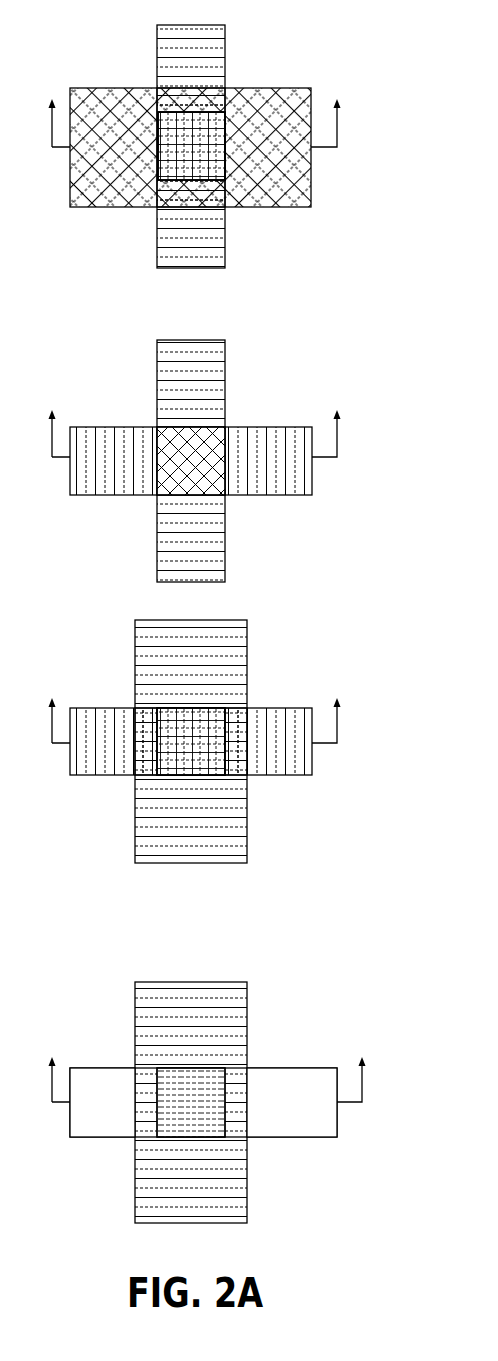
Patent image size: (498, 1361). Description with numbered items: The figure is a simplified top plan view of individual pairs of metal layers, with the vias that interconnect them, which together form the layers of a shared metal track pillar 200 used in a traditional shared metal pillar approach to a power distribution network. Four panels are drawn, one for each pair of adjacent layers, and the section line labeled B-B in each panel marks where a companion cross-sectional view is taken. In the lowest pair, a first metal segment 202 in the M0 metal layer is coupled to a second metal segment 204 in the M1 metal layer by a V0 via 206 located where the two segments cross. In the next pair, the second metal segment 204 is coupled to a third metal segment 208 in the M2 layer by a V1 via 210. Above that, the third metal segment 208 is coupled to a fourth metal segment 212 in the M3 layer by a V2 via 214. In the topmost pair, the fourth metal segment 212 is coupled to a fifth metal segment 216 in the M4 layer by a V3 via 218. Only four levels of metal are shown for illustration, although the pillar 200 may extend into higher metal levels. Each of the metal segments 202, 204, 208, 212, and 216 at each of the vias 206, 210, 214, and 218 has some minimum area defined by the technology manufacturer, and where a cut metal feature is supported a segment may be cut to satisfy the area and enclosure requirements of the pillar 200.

The pillar 200 is at (334, 56).
The first metal segment 202 is at (297, 1138).
The second metal segment 204 is at (247, 830).
The V0 via 206 is at (219, 1082).
The third metal segment 208 is at (276, 427).
The V1 via 210 is at (158, 773).
The fourth metal segment 212 is at (225, 243).
The V2 via 214 is at (220, 481).
The fifth metal segment 216 is at (311, 173).
The V3 via 218 is at (214, 117).